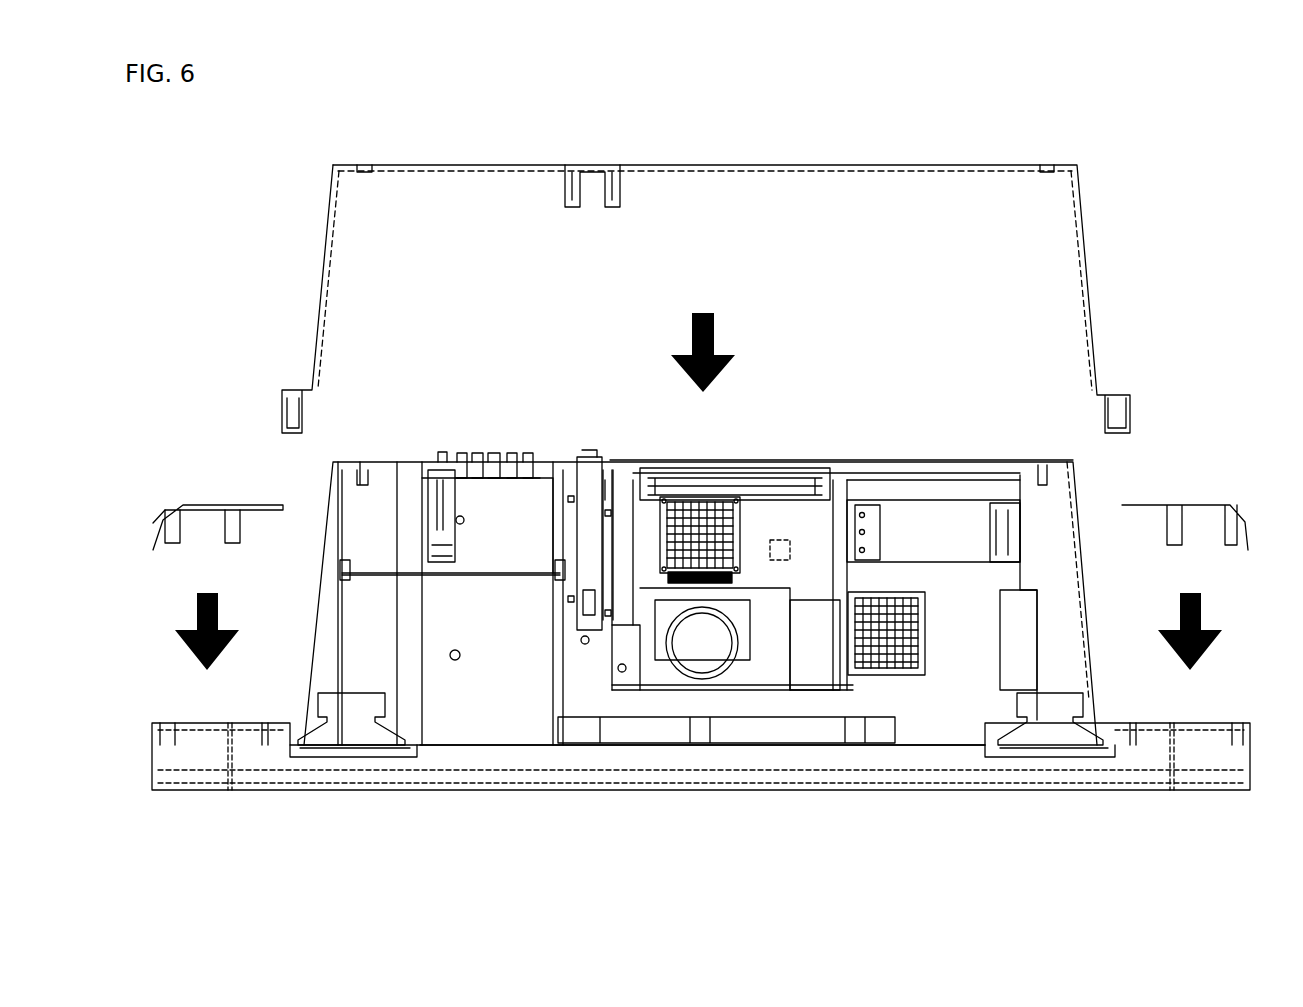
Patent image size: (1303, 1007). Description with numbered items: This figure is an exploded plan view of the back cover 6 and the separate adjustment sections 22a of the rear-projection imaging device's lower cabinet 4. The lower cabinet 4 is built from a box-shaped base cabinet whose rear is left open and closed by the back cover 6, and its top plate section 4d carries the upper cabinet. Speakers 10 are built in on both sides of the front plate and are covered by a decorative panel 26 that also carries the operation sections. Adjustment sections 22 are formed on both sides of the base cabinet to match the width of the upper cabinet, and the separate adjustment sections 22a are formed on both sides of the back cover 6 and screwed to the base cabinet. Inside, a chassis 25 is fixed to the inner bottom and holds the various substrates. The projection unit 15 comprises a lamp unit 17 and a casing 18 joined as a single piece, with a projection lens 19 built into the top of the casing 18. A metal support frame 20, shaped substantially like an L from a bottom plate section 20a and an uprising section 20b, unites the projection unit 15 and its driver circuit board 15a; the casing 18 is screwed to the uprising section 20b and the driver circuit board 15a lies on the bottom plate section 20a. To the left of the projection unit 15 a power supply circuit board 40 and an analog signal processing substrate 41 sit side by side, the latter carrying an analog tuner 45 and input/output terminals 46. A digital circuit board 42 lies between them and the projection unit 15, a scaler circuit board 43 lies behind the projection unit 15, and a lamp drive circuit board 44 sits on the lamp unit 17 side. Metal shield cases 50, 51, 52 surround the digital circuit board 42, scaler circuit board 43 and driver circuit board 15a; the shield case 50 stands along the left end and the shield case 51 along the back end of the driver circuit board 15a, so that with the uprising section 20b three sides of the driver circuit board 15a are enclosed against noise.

The back cover 6 is at (710, 165).
The lower cabinet 4 is at (1246, 791).
The top plate section 4d is at (505, 748).
The decorative panel 26 is at (985, 790).
The speaker 10 is at (360, 730).
The adjustment section 22 is at (195, 738).
The separate adjustment section 22a is at (213, 505).
The power supply circuit board 40 is at (470, 715).
The analog signal processing substrate 41 is at (507, 518).
The analog tuner 45 is at (447, 520).
The input/output terminals 46 is at (523, 477).
The shield case 50 is at (578, 470).
The digital circuit board 42 is at (588, 490).
The support frame 20 is at (760, 667).
The bottom plate section 20a is at (620, 640).
The uprising section 20b is at (630, 690).
The shield case 51 is at (725, 463).
The scaler circuit board 43 is at (773, 473).
The driver circuit board 15a is at (785, 548).
The shield case 52 is at (803, 550).
The lamp drive circuit board 44 is at (960, 525).
The chassis 25 is at (985, 633).
The projection lens 19 is at (690, 655).
The projection unit 15 is at (694, 692).
The casing 18 is at (797, 697).
The lamp unit 17 is at (905, 702).